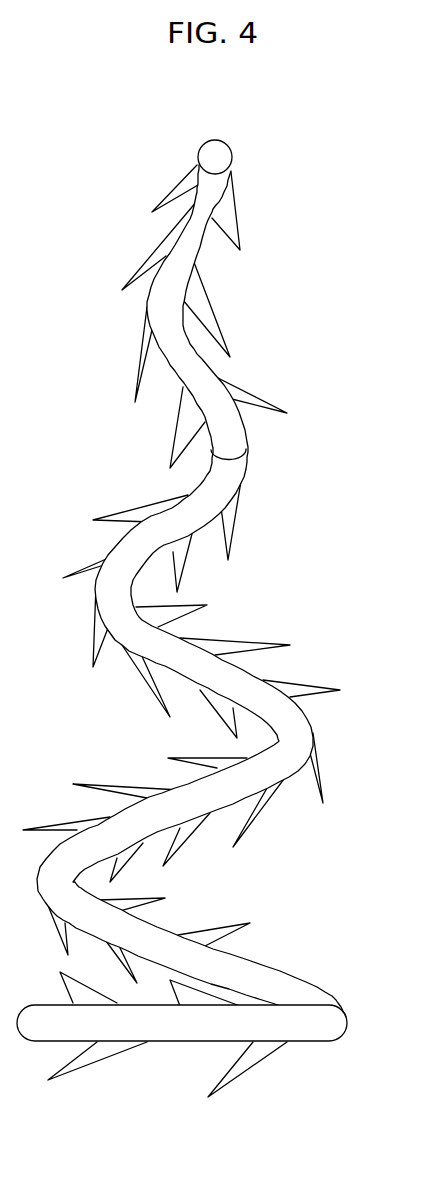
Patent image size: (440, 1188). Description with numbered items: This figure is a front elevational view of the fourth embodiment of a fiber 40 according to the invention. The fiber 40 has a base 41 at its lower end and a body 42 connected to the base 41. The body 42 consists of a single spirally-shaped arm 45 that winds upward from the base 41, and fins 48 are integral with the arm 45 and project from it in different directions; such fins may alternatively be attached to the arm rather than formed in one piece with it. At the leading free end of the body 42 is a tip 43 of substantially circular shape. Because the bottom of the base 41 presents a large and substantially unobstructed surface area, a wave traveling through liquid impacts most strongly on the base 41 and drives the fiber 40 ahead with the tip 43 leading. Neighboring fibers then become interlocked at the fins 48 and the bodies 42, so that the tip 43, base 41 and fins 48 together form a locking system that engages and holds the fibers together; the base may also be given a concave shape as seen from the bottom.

The fiber 40 is at (203, 609).
The base 41 is at (317, 1035).
The body 42 is at (246, 458).
The tip 43 is at (214, 156).
The spirally-shaped arm 45 is at (295, 729).
The fin 48 is at (228, 647).